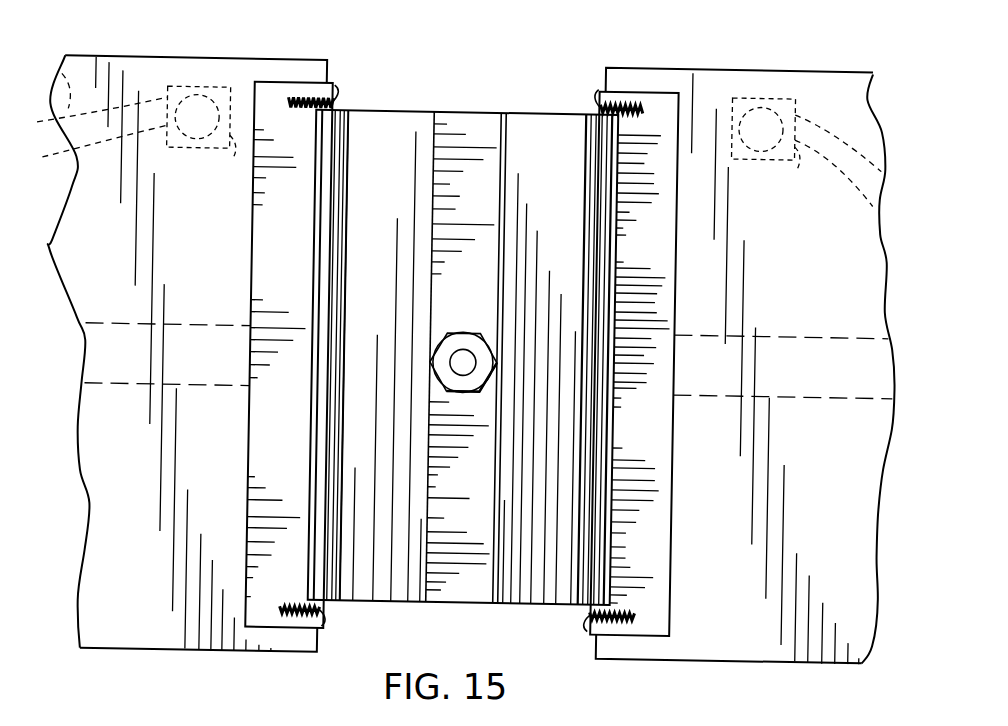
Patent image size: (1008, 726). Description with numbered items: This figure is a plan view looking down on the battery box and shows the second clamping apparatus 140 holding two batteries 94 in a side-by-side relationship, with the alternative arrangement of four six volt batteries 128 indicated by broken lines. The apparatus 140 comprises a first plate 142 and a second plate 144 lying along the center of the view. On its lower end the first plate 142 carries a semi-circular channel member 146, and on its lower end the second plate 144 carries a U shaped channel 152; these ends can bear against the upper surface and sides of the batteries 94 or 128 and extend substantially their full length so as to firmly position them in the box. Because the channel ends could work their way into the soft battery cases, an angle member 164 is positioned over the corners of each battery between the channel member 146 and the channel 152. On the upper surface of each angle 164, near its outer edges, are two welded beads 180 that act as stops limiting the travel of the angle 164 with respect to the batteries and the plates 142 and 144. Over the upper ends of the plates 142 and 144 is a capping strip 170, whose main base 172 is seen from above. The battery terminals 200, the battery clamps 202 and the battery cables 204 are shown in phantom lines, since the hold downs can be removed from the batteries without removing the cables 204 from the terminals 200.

The battery 94 is at (186, 58).
The battery 128 is at (226, 386).
The second clamping apparatus 140 is at (464, 325).
The first plate 142 is at (532, 124).
The second plate 144 is at (384, 124).
The semi-circular channel member 146 is at (597, 157).
The U shaped channel 152 is at (333, 170).
The angle member 164 is at (254, 238).
The capping strip 170 is at (493, 320).
The main base 172 is at (441, 298).
The welded bead 180 is at (330, 88).
The battery terminal 200 is at (195, 112).
The battery clamp 202 is at (233, 160).
The battery cable 204 is at (58, 80).